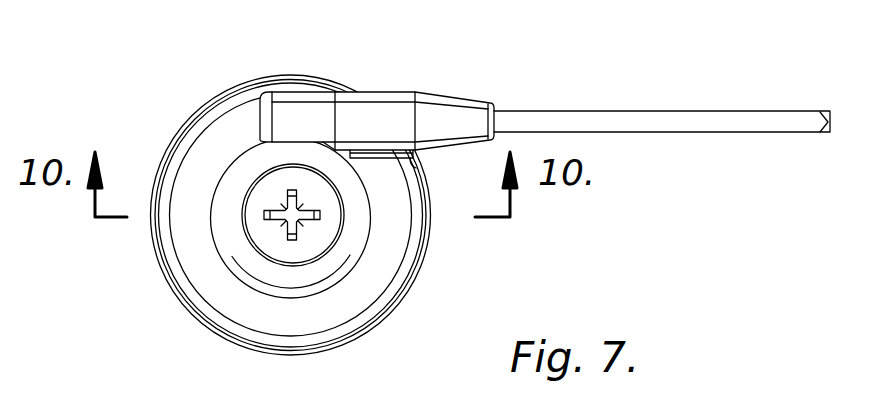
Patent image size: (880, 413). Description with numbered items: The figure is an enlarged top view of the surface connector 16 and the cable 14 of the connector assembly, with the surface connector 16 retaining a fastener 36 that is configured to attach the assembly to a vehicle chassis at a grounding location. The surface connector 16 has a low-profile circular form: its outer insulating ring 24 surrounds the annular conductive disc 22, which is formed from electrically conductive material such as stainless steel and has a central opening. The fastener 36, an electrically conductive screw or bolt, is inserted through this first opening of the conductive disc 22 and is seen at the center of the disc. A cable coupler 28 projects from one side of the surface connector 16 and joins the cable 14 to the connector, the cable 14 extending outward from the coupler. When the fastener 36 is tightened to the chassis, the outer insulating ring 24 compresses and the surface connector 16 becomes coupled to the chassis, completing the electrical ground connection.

The cable 14 is at (661, 104).
The surface connector 16 is at (271, 65).
The conductive disc 22 is at (240, 247).
The outer insulating ring 24 is at (208, 143).
The cable coupler 28 is at (453, 102).
The fastener 36 is at (323, 233).